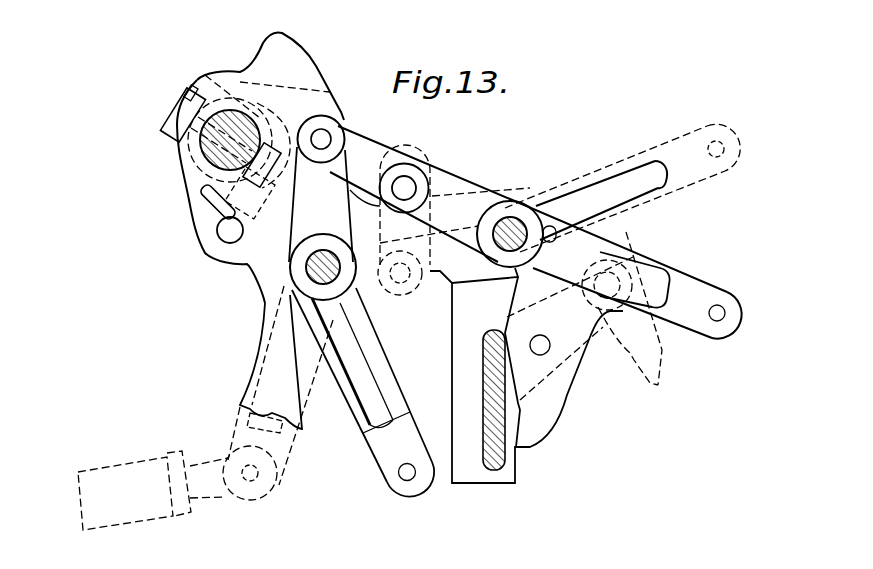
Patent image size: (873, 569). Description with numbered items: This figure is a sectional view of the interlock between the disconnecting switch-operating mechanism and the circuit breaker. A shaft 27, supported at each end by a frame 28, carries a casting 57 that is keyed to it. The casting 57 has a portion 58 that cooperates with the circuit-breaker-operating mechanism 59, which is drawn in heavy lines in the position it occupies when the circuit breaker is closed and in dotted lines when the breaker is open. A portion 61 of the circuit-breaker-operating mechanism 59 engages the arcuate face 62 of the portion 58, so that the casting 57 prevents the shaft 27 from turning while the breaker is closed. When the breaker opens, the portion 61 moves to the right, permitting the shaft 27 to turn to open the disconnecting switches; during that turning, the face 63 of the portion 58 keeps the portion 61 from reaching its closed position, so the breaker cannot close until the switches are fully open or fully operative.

The shaft 27 is at (197, 167).
The frame 28 is at (207, 248).
The casting 57 is at (181, 110).
The portion 58 is at (277, 48).
The circuit-breaker-operating mechanism 59 is at (495, 177).
The portion of the circuit-breaker-operating mechanism 61 is at (334, 135).
The arcuate face 62 is at (323, 128).
The face 63 is at (300, 55).